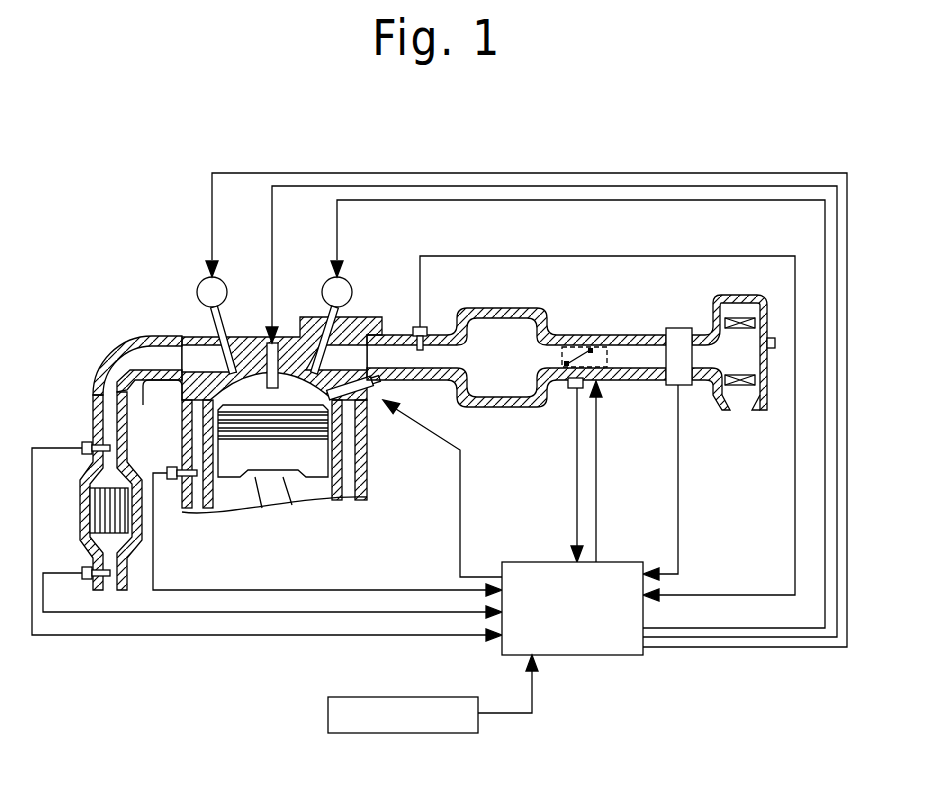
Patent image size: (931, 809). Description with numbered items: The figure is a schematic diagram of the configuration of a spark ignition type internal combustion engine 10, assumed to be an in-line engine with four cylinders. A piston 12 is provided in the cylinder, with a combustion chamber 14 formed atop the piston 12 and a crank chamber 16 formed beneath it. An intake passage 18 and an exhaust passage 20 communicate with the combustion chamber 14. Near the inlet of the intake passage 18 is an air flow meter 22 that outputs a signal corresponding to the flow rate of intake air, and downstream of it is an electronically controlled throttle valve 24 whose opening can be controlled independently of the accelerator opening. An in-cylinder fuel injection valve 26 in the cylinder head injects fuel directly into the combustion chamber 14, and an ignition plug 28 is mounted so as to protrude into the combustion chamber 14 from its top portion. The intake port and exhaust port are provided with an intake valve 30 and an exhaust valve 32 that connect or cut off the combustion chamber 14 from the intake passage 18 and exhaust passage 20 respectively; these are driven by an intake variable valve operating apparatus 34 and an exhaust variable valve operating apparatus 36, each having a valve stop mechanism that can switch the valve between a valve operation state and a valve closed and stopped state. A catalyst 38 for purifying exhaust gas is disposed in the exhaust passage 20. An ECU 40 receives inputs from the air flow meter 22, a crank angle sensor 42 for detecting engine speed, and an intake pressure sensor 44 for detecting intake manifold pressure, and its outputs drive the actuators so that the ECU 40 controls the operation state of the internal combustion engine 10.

The internal combustion engine 10 is at (392, 497).
The piston 12 is at (312, 458).
The combustion chamber 14 is at (243, 392).
The crank chamber 16 is at (232, 495).
The intake passage 18 is at (566, 322).
The exhaust passage 20 is at (82, 360).
The air flow meter 22 is at (678, 340).
The throttle valve 24 is at (585, 350).
The in-cylinder fuel injection valve 26 is at (384, 394).
The ignition plug 28 is at (268, 365).
The intake valve 30 is at (293, 370).
The exhaust valve 32 is at (216, 345).
The intake variable valve operating apparatus 34 is at (350, 284).
The exhaust variable valve operating apparatus 36 is at (204, 284).
The catalyst 38 is at (100, 510).
The ECU 40 is at (613, 656).
The crank angle sensor 42 is at (328, 714).
The intake pressure sensor 44 is at (430, 325).